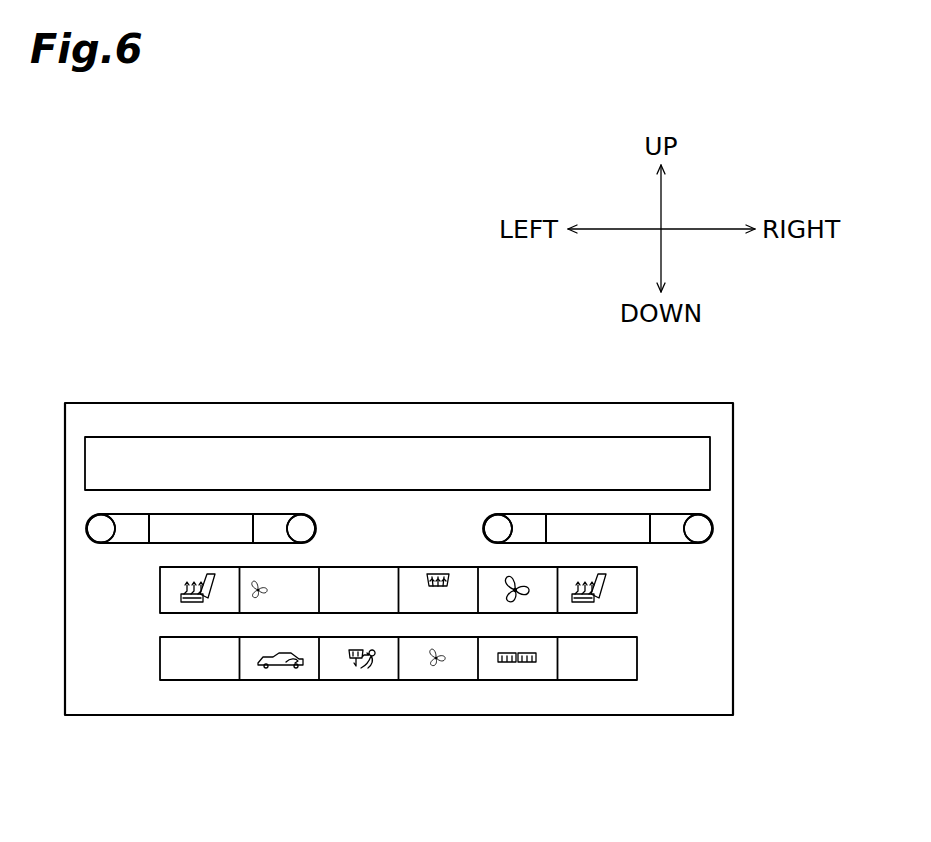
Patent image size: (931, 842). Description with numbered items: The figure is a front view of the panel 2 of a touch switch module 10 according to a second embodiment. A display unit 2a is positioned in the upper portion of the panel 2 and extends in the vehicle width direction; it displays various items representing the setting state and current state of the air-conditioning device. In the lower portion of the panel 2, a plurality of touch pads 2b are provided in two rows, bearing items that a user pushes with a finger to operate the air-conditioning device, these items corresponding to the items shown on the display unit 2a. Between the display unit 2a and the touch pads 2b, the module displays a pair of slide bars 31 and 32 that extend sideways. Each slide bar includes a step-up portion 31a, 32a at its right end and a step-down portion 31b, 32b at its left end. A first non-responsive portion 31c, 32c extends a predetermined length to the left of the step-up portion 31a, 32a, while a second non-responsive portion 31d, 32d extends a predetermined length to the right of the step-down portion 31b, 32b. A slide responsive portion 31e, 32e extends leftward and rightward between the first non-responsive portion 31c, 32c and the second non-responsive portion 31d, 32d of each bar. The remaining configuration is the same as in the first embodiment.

The touch switch module 10 is at (279, 378).
The panel 2 is at (395, 455).
The display unit 2a is at (92, 594).
The touch pads 2b is at (265, 690).
The slide bar 31 is at (673, 547).
The step-up portion 31a is at (697, 528).
The step-down portion 31b is at (497, 532).
The first non-responsive portion 31c is at (665, 522).
The second non-responsive portion 31d is at (528, 522).
The slide responsive portion 31e is at (592, 530).
The slide bar 32 is at (133, 548).
The step-up portion 32a is at (299, 530).
The step-down portion 32b is at (103, 532).
The first non-responsive portion 32c is at (265, 522).
The second non-responsive portion 32d is at (128, 523).
The slide responsive portion 32e is at (191, 532).